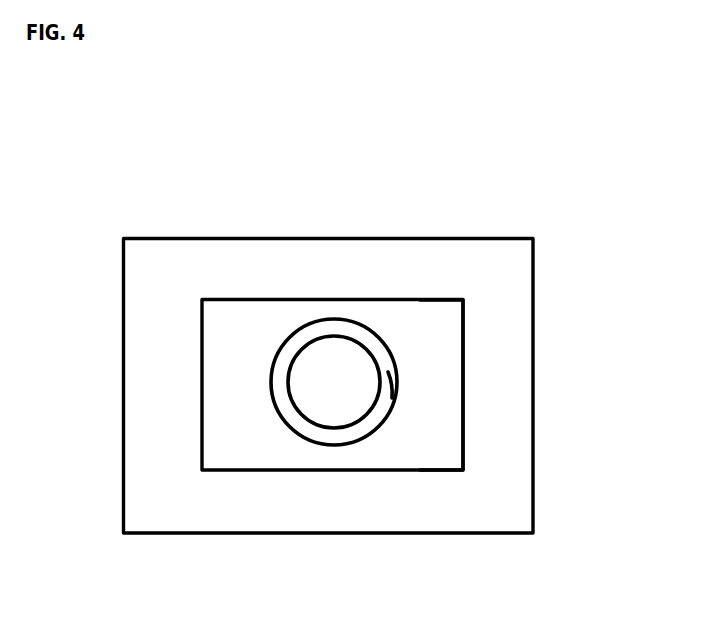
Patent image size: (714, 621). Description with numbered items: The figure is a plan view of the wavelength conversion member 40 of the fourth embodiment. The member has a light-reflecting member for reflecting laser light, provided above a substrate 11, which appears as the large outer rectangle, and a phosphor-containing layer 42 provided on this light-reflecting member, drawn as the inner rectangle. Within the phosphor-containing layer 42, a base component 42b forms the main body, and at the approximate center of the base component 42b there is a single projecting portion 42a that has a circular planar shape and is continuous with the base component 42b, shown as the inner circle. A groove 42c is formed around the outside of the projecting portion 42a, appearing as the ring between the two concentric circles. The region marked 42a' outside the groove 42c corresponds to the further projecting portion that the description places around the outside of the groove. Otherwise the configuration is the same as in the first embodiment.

The substrate 11 is at (202, 506).
The wavelength conversion member 40 is at (557, 277).
The phosphor-containing layer 42 is at (478, 162).
The projecting portion 42a is at (330, 299).
The base component 42b is at (368, 335).
The outer rectangular region 42a' is at (455, 320).
The groove 42c is at (384, 372).